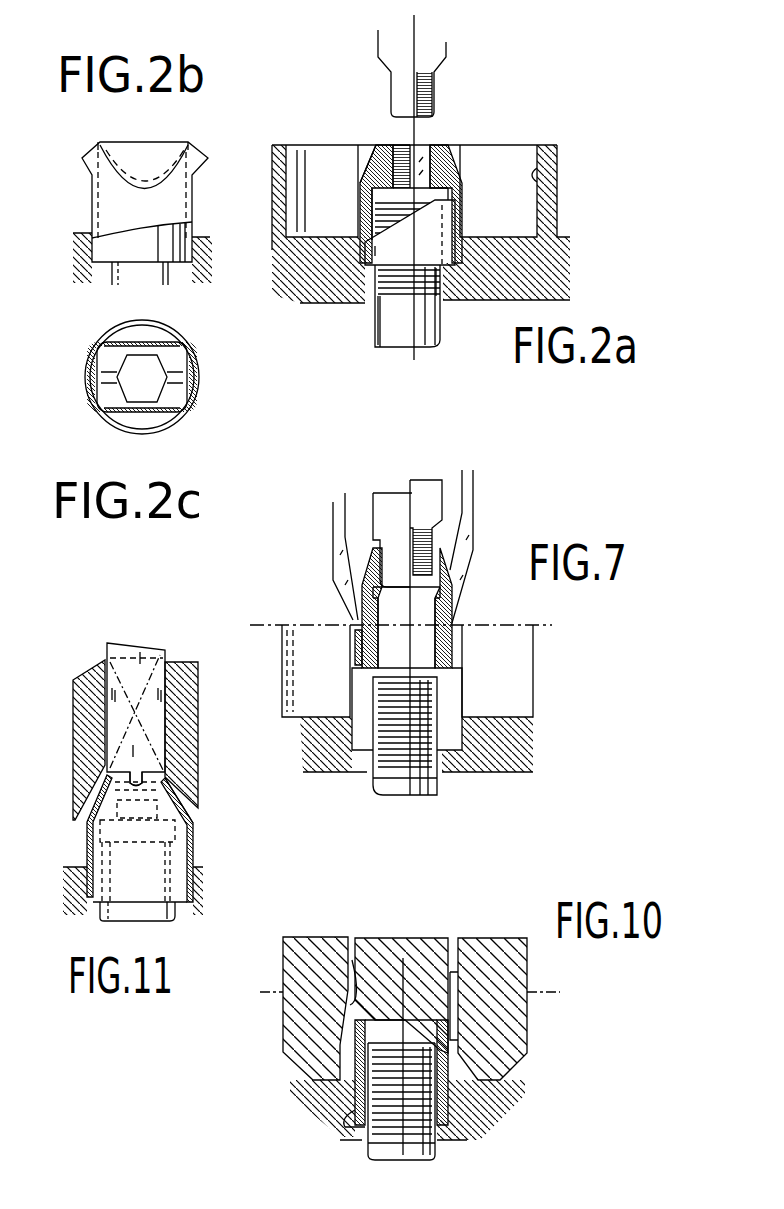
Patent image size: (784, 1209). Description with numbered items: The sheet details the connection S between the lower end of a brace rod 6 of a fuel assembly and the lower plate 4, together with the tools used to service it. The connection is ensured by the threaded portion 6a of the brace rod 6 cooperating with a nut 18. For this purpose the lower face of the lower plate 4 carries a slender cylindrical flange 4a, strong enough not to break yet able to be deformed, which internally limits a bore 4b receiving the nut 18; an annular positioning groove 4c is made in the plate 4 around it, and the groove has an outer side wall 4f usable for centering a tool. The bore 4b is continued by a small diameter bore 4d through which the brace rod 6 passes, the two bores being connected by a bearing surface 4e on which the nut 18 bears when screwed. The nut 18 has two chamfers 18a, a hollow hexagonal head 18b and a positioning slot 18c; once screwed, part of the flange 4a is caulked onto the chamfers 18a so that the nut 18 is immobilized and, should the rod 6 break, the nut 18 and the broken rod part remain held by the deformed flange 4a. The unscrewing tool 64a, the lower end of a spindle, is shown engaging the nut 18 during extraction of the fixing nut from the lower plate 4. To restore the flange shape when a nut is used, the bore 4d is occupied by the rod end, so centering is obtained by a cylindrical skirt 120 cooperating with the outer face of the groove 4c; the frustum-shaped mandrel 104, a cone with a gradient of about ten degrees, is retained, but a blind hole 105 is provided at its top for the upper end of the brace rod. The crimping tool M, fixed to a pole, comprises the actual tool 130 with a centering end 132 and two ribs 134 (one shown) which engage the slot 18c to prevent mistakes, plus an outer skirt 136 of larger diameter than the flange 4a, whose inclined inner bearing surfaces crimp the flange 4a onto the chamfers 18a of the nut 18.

In FIG. 2a, the lower plate 4 is at (596, 244).
In FIG. 7, the lower plate 4 is at (556, 739).
In FIG. 2b, the cylindrical flange 4a is at (193, 150).
In FIG. 2c, the cylindrical flange 4a is at (193, 388).
In FIG. 2a, the cylindrical flange 4a is at (467, 190).
In FIG. 7, the cylindrical flange 4a is at (462, 684).
In FIG. 11, the cylindrical flange 4a is at (193, 830).
In FIG. 10, the cylindrical flange 4a is at (347, 1037).
In FIG. 2a, the bore 4b is at (378, 150).
In FIG. 2a, the annular positioning groove 4c is at (322, 157).
In FIG. 10, the annular positioning groove 4c is at (518, 1067).
In FIG. 2a, the small diameter bore 4d is at (400, 310).
In FIG. 10, the small diameter bore 4d is at (340, 1127).
In FIG. 2a, the bearing surface 4e is at (367, 258).
In FIG. 2a, the outer side wall of groove 4f is at (540, 173).
In FIG. 2a, the brace rod 6 is at (398, 343).
In FIG. 7, the brace rod 6 is at (437, 780).
In FIG. 11, the brace rod 6 is at (122, 907).
In FIG. 10, the brace rod 6 is at (433, 1147).
In FIG. 2a, the threaded portion 6a is at (436, 297).
In FIG. 2b, the nut 18 is at (117, 143).
In FIG. 2c, the nut 18 is at (170, 397).
In FIG. 2a, the nut 18 is at (432, 143).
In FIG. 7, the nut 18 is at (457, 645).
In FIG. 2c, the chamfers 18a is at (132, 343).
In FIG. 2c, the hollow hexagonal head 18b is at (132, 413).
In FIG. 2c, the positioning slot 18c is at (108, 378).
In FIG. 11, the positioning slot 18c is at (160, 767).
In FIG. 7, the unscrewing tool 64a is at (430, 496).
In FIG. 10, the frustum-shaped mandrel 104 is at (350, 990).
In FIG. 10, the blind hole 105 is at (403, 958).
In FIG. 10, the cylindrical skirt 120 is at (302, 973).
In FIG. 11, the actual tool 130 is at (113, 621).
In FIG. 11, the centering end 132 is at (150, 798).
In FIG. 11, the ribs 134 is at (137, 772).
In FIG. 11, the outer skirt 136 is at (190, 803).
In FIG. 2a, the connection S is at (513, 85).
In FIG. 11, the crimping tool M is at (204, 648).